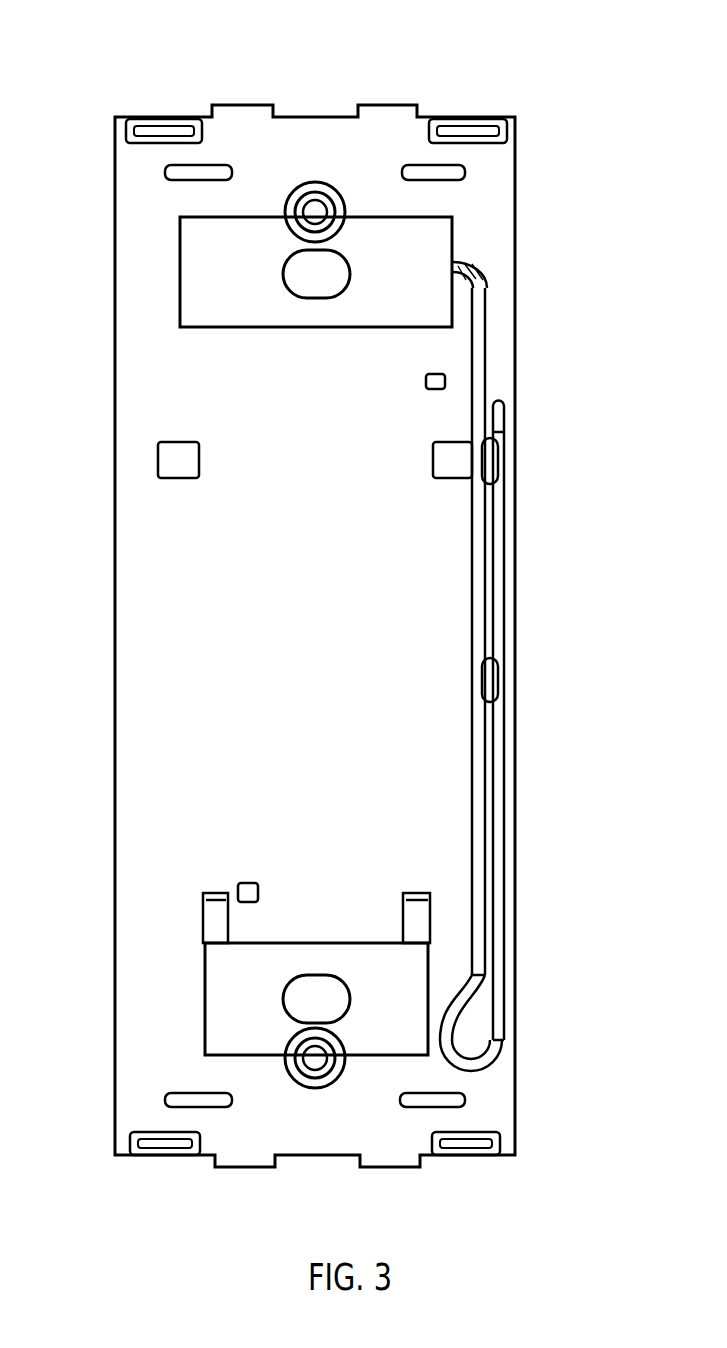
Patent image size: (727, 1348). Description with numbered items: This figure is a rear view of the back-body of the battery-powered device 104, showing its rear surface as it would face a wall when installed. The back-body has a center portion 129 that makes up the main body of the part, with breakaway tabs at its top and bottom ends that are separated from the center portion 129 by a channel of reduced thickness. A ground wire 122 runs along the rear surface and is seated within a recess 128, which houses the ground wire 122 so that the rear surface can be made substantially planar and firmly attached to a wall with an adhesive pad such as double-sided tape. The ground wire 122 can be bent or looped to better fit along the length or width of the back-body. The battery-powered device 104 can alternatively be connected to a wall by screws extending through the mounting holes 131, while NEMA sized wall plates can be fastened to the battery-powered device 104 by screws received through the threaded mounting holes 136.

The battery-powered device 104 is at (262, 83).
The ground wire 122 is at (486, 372).
The recess 128 is at (485, 270).
The center portion 129 is at (127, 323).
The mounting holes 131 is at (340, 255).
The threaded mounting holes 136 is at (323, 200).